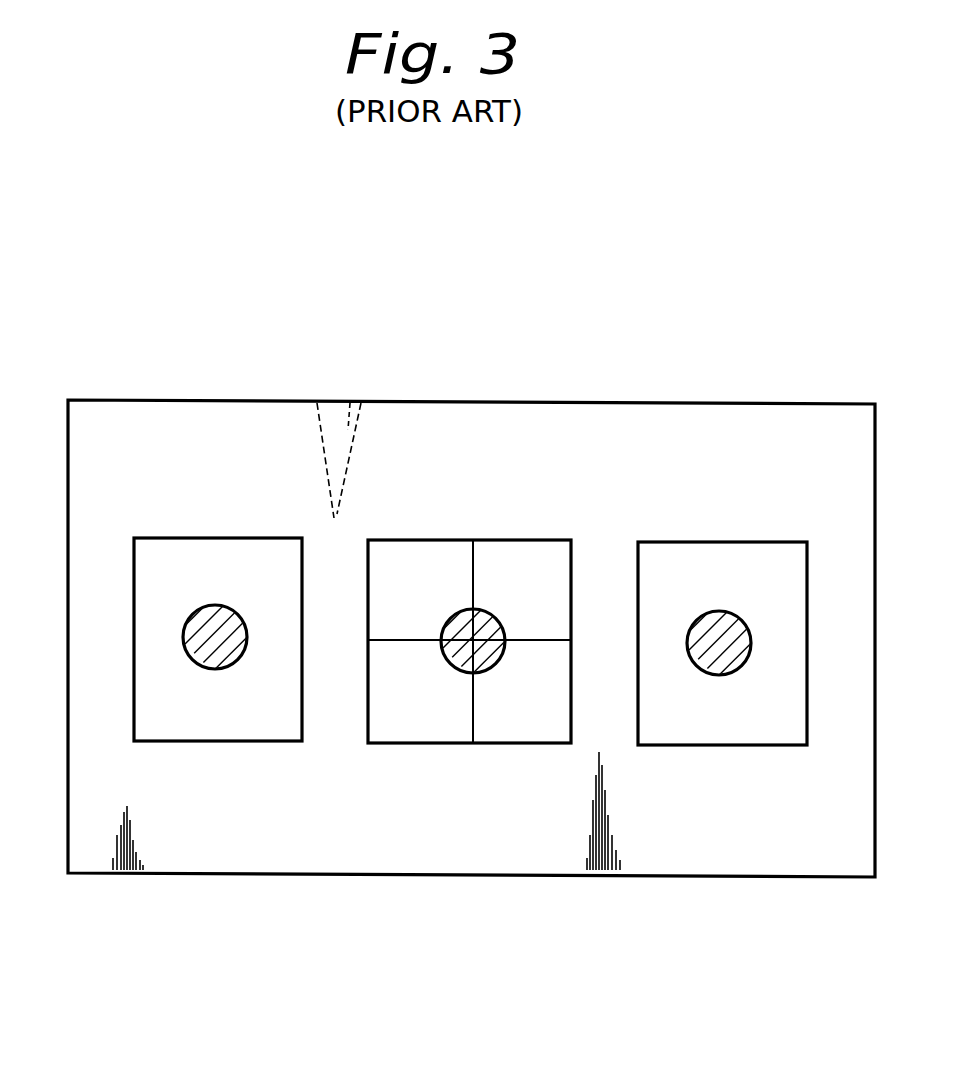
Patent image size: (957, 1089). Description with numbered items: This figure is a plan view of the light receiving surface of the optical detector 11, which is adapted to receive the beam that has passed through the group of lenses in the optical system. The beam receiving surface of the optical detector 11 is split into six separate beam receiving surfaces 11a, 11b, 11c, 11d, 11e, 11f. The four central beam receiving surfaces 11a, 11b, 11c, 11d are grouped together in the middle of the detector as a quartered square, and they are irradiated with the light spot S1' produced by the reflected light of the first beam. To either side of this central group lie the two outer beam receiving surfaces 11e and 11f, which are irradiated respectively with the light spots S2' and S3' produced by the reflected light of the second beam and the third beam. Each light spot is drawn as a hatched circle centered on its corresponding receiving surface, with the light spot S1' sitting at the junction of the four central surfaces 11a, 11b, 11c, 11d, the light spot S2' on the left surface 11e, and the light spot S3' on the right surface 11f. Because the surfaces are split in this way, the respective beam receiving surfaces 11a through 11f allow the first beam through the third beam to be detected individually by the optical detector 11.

The optical detector 11 is at (175, 400).
The central beam receiving surface 11a is at (420, 540).
The central beam receiving surface 11b is at (523, 540).
The central beam receiving surface 11c is at (445, 743).
The central beam receiving surface 11d is at (543, 743).
The side beam receiving surface 11e is at (252, 741).
The side beam receiving surface 11f is at (710, 745).
The light spot S1' is at (432, 744).
The light spot S2' is at (199, 742).
The light spot S3' is at (733, 745).